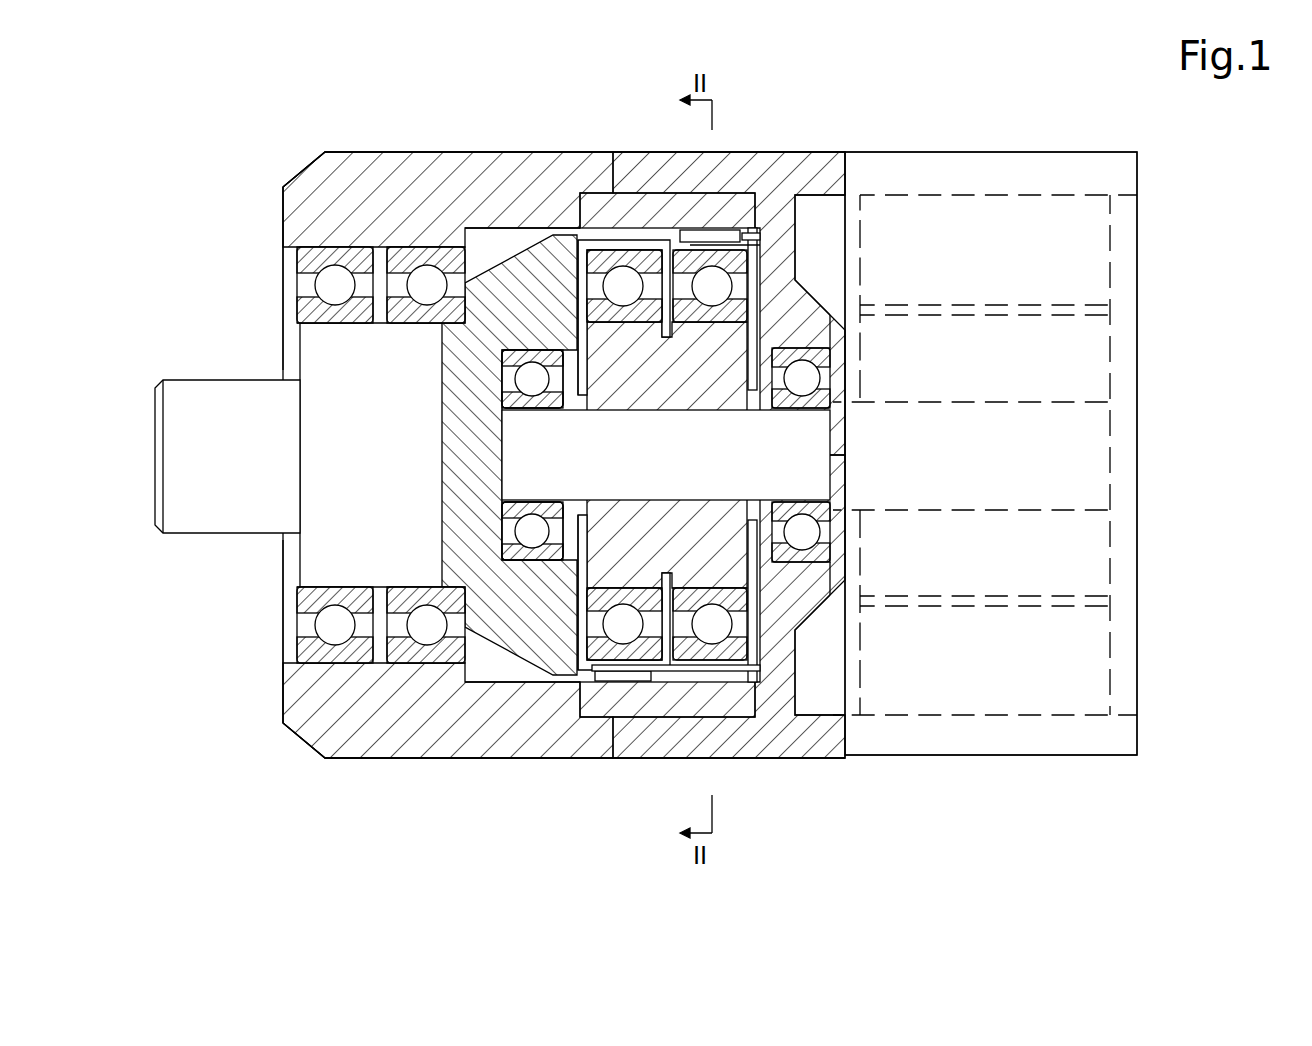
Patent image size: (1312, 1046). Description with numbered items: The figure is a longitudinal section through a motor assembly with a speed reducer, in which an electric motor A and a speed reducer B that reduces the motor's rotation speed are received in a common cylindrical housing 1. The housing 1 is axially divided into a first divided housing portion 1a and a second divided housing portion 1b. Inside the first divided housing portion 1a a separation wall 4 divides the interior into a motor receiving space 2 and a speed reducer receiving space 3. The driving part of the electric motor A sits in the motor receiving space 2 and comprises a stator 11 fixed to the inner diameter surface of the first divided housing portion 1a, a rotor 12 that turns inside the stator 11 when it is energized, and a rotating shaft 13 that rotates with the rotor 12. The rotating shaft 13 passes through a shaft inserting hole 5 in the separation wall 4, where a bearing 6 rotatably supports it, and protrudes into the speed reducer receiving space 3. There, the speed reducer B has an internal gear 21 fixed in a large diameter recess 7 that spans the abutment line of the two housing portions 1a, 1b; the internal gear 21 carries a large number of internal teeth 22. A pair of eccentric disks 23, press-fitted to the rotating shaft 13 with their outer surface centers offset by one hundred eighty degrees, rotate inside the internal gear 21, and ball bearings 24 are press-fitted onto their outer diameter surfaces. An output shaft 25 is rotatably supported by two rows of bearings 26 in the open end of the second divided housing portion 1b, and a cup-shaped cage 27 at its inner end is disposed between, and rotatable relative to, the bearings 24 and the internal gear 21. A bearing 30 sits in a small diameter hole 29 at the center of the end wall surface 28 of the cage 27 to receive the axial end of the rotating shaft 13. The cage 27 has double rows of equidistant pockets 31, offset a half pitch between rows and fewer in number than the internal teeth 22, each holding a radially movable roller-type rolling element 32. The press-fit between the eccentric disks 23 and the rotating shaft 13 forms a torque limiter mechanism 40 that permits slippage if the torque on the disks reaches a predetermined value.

The housing 1 is at (485, 152).
The first divided housing portion 1a is at (820, 160).
The second divided housing portion 1b is at (548, 152).
The motor receiving space 2 is at (830, 200).
The speed reducer receiving space 3 is at (485, 238).
The separation wall 4 is at (790, 248).
The shaft inserting hole 5 is at (762, 382).
The bearing 6 is at (800, 400).
The large diameter recess 7 is at (632, 193).
The stator 11 is at (1080, 268).
The rotor 12 is at (1080, 358).
The rotating shaft 13 is at (598, 474).
The internal gear 21 is at (700, 232).
The internal teeth 22 is at (757, 234).
The eccentric disks 23 is at (580, 600).
The bearings 24 is at (595, 575).
The output shaft 25 is at (218, 392).
The bearings 26 is at (480, 240).
The cage 27 is at (733, 655).
The surface of the end wall 28 is at (560, 585).
The small diameter hole 29 is at (497, 533).
The bearing 30 is at (518, 562).
The pockets 31 is at (607, 677).
The rolling element 32 is at (742, 232).
The torque limiter mechanism 40 is at (668, 413).
The electric motor A is at (1000, 154).
The speed reducer B is at (366, 154).